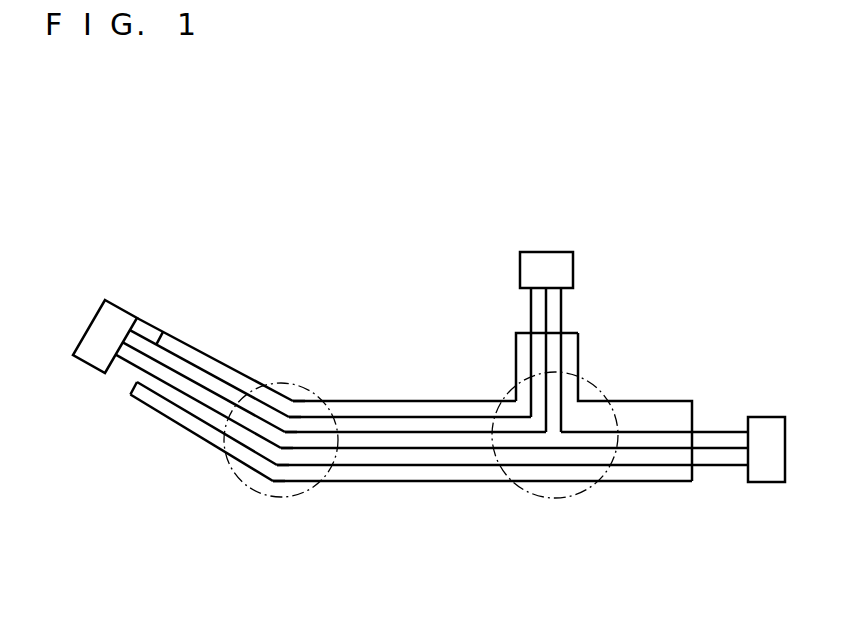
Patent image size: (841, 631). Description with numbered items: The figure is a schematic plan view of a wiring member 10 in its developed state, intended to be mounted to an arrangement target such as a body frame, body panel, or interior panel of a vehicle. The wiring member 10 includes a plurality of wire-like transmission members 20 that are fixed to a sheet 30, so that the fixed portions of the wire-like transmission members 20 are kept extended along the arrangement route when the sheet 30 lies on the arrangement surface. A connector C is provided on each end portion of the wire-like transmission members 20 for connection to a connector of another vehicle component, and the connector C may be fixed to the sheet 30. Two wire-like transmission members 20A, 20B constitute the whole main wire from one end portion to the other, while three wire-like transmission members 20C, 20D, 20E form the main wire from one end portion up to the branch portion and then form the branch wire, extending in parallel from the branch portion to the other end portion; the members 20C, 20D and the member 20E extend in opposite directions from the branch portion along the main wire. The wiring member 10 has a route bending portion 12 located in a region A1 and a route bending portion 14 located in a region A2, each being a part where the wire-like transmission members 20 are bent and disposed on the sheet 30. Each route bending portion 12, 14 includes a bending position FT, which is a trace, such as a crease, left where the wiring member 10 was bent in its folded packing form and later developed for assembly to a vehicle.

The wiring member 10 is at (103, 165).
The route bending portion 12 is at (283, 372).
The route bending portion 14 is at (505, 392).
The wire-like transmission member 20 is at (411, 382).
The wire-like transmission member 20A is at (153, 400).
The wire-like transmission member 20B is at (213, 412).
The wire-like transmission member 20C is at (168, 360).
The wire-like transmission member 20D is at (222, 373).
The wire-like transmission member 20E is at (660, 427).
The sheet 30 is at (412, 485).
The bending position FT is at (305, 408).
The connector C is at (92, 358).
The region A1 is at (271, 500).
The region A2 is at (554, 500).